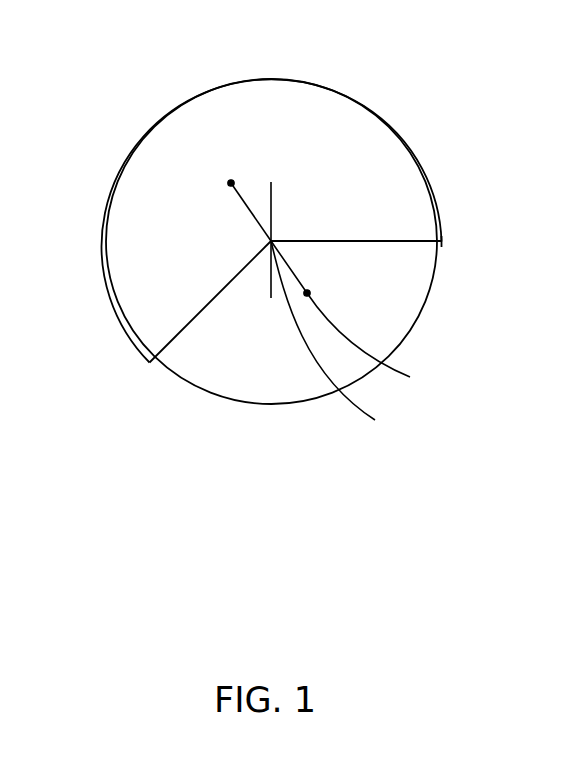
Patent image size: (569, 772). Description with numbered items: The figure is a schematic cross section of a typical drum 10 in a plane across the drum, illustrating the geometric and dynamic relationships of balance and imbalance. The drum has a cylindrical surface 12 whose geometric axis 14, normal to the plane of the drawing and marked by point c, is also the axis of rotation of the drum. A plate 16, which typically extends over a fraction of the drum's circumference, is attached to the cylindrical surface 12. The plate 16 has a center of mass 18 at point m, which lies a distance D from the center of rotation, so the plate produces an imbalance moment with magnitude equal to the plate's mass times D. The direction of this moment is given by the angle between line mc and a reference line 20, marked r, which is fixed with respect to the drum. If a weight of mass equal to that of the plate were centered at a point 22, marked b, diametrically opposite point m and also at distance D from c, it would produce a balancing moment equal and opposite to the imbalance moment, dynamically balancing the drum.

The drum 10 is at (463, 237).
The cylindrical surface 12 is at (212, 395).
The axis 14 is at (334, 350).
The plate 16 is at (137, 137).
The center of mass 18 is at (232, 182).
The reference line 20 is at (400, 238).
The balancing point 22 is at (364, 323).